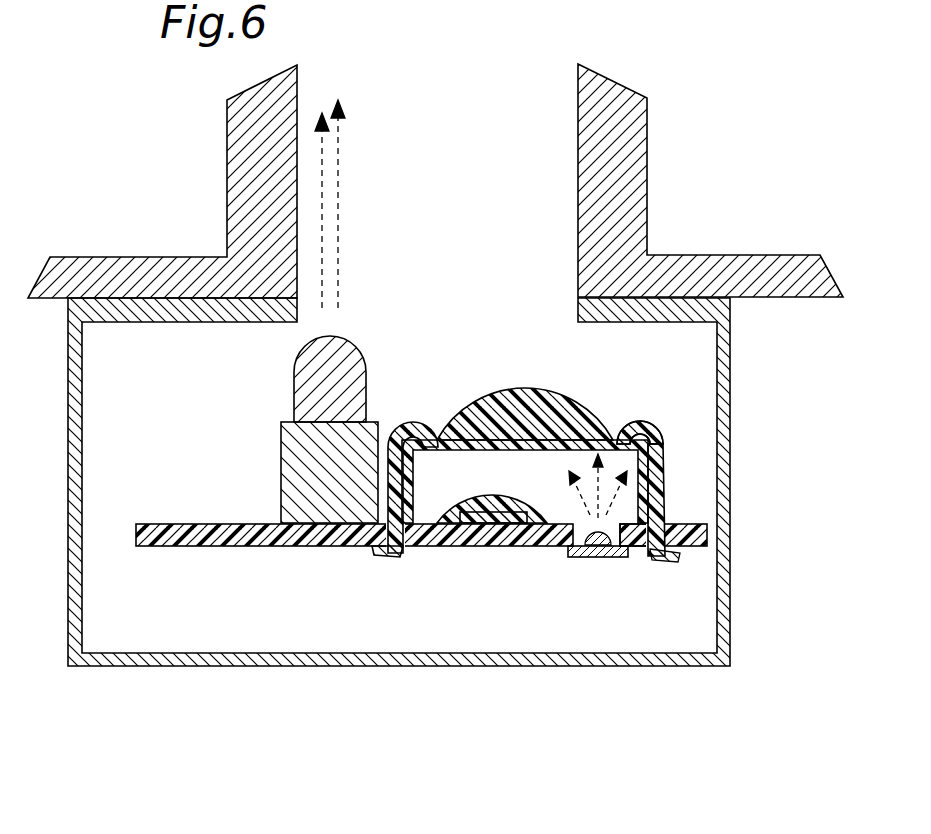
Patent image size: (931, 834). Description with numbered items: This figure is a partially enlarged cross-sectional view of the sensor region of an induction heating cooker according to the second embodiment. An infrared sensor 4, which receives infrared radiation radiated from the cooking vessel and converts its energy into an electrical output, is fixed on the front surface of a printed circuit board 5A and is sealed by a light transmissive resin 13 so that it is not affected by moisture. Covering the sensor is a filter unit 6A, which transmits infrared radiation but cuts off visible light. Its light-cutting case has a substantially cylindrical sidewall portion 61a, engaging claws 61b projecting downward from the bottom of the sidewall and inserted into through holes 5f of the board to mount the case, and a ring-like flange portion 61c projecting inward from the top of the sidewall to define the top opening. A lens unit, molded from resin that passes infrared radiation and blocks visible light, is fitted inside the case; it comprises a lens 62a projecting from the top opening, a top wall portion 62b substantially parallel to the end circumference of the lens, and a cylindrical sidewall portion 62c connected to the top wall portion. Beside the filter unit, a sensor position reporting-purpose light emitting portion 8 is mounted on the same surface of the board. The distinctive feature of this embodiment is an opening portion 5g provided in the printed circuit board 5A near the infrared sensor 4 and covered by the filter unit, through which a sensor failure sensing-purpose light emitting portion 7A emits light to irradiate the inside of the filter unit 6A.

The sensor position reporting-purpose light emitting portion 8 is at (317, 372).
The filter unit 6A is at (573, 444).
The lens 62a is at (505, 400).
The flange portion 61c is at (400, 423).
The top wall portion 62b is at (653, 432).
The cylindrical sidewall portion 62c is at (647, 472).
The sidewall portion 61a is at (413, 478).
The light transmissive resin 13 is at (517, 495).
The printed circuit board 5A is at (486, 581).
The engaging claw 61b is at (390, 557).
The through hole 5f is at (408, 546).
The infrared sensor 4 is at (500, 525).
The sensor failure sensing-purpose light emitting portion 7A is at (605, 558).
The opening portion 5g is at (640, 547).